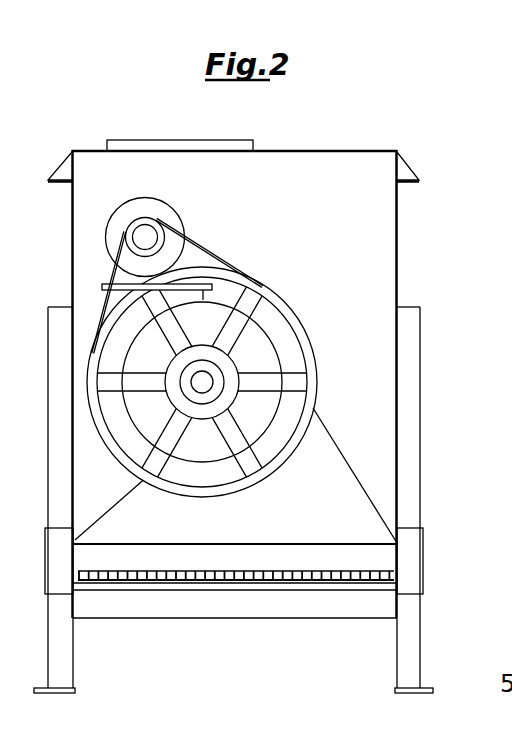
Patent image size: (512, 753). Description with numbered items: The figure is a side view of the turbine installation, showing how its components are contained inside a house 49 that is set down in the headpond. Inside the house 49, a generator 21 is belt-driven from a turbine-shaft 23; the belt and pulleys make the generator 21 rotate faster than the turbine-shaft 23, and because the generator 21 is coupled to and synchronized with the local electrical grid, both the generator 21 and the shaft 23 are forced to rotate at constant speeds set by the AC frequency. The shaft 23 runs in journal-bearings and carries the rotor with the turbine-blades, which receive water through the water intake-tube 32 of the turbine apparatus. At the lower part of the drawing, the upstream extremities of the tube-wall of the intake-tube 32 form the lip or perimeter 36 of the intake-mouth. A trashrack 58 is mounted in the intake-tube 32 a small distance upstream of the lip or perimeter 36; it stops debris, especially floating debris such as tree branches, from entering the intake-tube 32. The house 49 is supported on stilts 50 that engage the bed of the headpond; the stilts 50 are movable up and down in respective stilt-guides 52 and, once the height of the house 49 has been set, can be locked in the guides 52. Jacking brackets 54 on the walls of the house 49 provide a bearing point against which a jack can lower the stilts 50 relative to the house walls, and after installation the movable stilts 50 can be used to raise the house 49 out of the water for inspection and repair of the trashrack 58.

The generator 21 is at (165, 207).
The turbine-shaft 23 is at (203, 381).
The water intake-tube 32 is at (323, 530).
The lip or perimeter 36 is at (293, 620).
The house 49 is at (352, 236).
The stilts 50 is at (408, 432).
The stilt-guides 52 is at (413, 568).
The jacking brackets 54 is at (412, 184).
The trashrack 58 is at (225, 572).